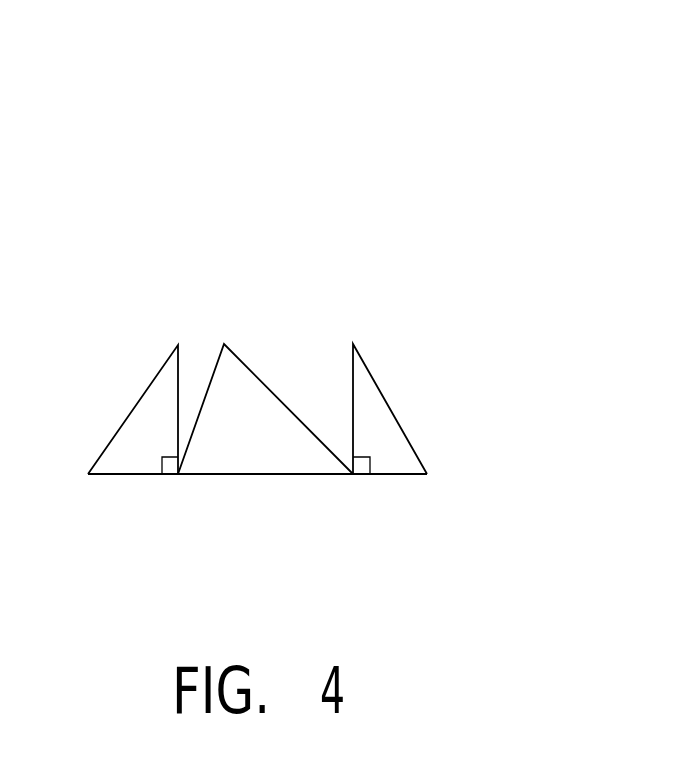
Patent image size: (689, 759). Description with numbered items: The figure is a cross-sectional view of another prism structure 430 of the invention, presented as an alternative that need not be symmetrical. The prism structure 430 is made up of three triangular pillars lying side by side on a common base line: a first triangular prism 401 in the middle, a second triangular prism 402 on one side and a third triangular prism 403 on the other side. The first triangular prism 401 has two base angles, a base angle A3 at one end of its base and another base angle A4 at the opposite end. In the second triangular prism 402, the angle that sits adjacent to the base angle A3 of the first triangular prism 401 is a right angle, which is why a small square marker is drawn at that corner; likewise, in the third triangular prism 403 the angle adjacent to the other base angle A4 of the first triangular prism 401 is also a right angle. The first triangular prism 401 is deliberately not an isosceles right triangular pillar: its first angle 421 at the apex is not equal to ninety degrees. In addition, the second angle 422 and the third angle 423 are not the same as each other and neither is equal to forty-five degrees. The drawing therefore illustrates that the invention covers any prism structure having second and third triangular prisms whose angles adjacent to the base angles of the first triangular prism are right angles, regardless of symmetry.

The prism structure 430 is at (584, 216).
The first angle 421 is at (220, 357).
The second angle 422 is at (171, 357).
The third angle 423 is at (358, 350).
The first triangular prism 401 is at (260, 474).
The second triangular prism 402 is at (127, 474).
The third triangular prism 403 is at (397, 474).
The base angle A3 is at (198, 474).
The base angle A4 is at (332, 474).